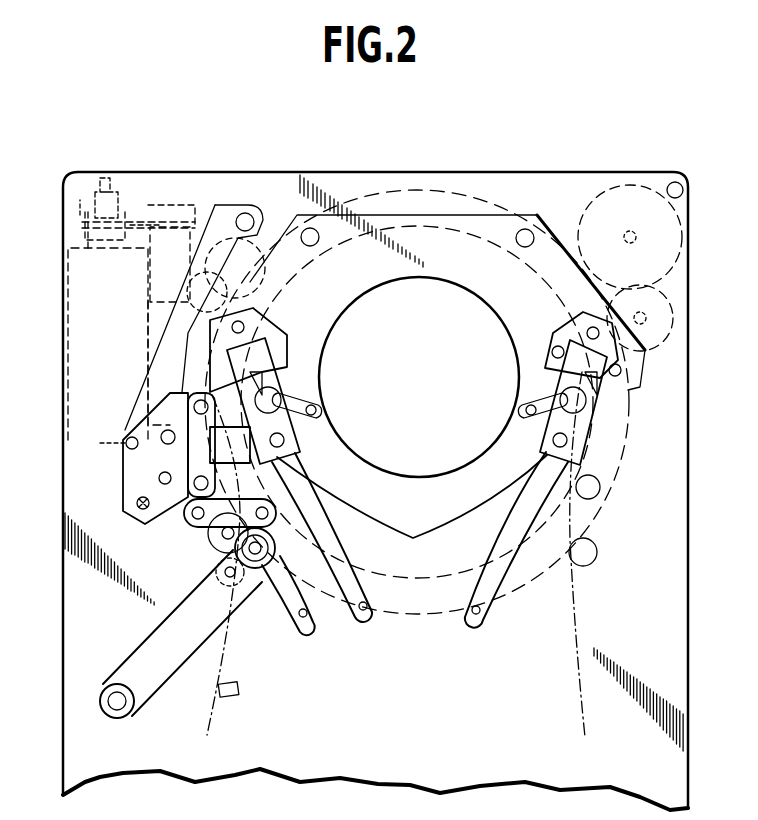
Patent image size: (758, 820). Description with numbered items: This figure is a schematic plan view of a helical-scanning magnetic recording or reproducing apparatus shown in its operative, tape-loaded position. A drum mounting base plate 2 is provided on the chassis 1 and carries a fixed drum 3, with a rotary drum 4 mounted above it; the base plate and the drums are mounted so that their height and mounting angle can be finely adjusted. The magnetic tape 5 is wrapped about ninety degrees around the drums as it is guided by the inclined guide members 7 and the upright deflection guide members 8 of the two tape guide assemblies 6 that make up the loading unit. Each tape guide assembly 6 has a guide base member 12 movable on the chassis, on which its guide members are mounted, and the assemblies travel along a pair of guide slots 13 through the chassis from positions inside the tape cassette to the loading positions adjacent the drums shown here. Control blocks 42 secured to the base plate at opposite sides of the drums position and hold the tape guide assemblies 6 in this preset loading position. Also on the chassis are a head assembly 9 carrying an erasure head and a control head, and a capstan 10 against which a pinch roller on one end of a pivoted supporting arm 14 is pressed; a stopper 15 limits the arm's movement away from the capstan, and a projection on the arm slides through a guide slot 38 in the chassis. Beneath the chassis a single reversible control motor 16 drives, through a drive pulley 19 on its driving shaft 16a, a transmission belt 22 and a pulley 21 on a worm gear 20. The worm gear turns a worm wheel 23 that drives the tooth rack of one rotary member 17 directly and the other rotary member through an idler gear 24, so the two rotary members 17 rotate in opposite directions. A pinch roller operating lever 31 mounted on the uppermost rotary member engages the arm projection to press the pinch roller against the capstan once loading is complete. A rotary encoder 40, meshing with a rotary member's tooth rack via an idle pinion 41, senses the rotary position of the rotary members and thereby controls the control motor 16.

The chassis 1 is at (665, 473).
The drum mounting base plate 2 is at (545, 215).
The fixed drum 3 is at (448, 280).
The rotary drum 4 is at (448, 280).
The magnetic tape 5 is at (585, 622).
The tape guide assembly 6 is at (292, 445).
The inclined guide member 7 is at (318, 402).
The deflection guide member 8 is at (272, 392).
The head assembly 9 is at (210, 442).
The capstan 10 is at (225, 540).
The guide base member 12 is at (302, 456).
The guide slot 13 is at (370, 615).
The supporting arm 14 is at (158, 682).
The stopper 15 is at (236, 698).
The control motor 16 is at (72, 292).
The driving shaft 16a is at (110, 188).
The rotary member 17 is at (388, 200).
The drive pulley 19 is at (84, 213).
The worm gear 20 is at (178, 215).
The pulley 21 is at (200, 228).
The transmission belt 22 is at (140, 226).
The worm wheel 23 is at (265, 235).
The idler gear 24 is at (160, 332).
The pinch roller operating lever 31 is at (250, 585).
The guide slot 38 is at (304, 632).
The rotary encoder 40 is at (680, 233).
The idle pinion 41 is at (680, 318).
The control block 42 is at (278, 330).